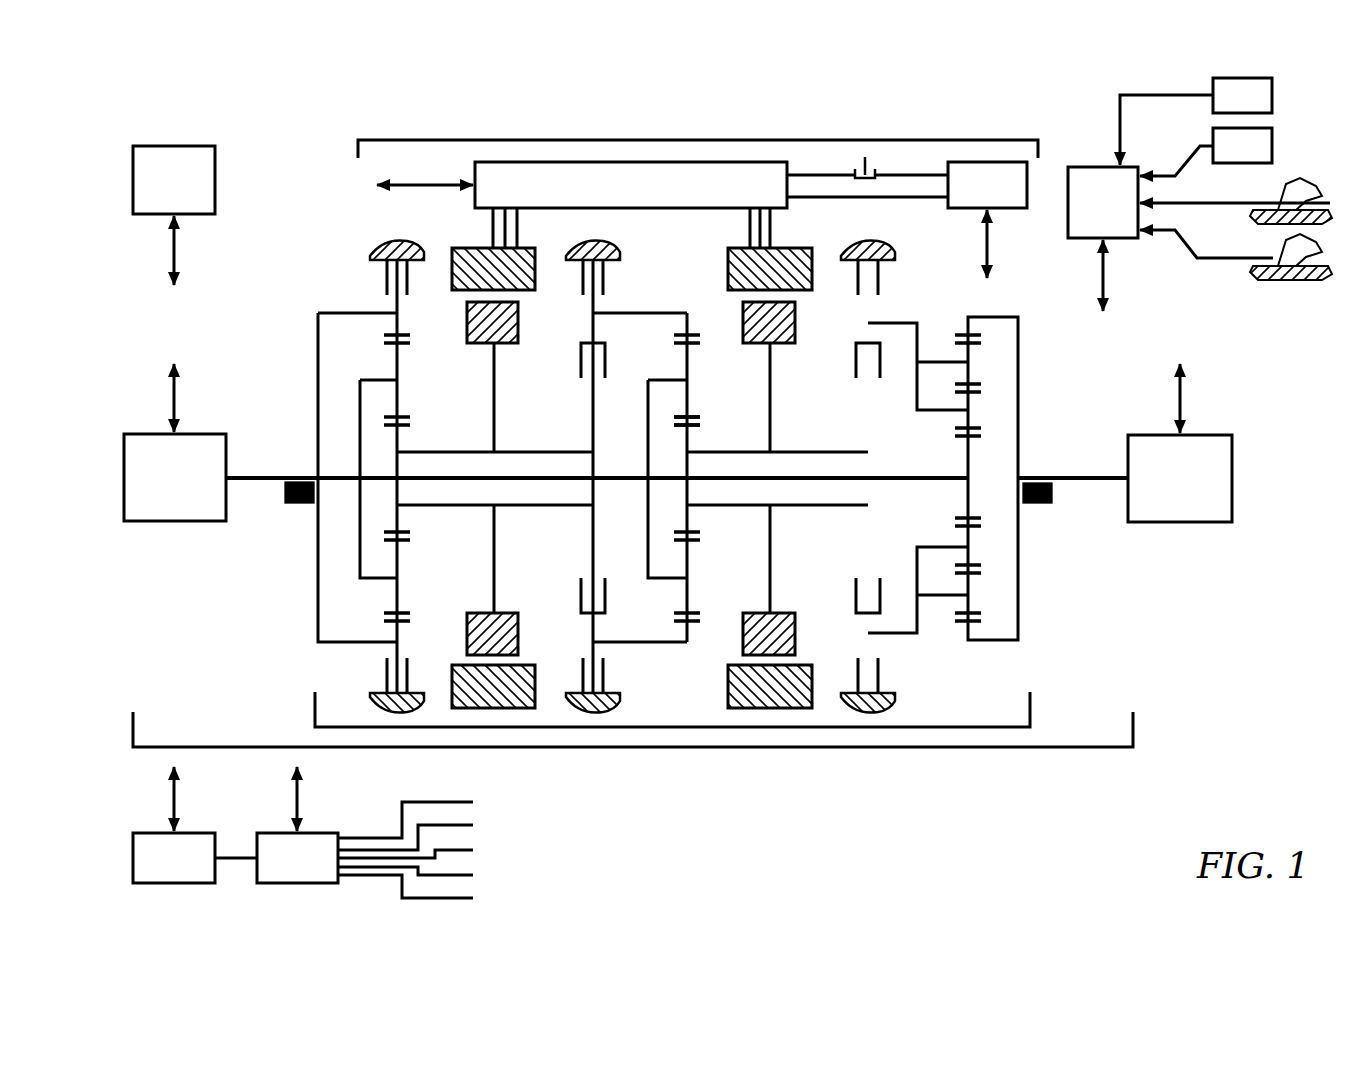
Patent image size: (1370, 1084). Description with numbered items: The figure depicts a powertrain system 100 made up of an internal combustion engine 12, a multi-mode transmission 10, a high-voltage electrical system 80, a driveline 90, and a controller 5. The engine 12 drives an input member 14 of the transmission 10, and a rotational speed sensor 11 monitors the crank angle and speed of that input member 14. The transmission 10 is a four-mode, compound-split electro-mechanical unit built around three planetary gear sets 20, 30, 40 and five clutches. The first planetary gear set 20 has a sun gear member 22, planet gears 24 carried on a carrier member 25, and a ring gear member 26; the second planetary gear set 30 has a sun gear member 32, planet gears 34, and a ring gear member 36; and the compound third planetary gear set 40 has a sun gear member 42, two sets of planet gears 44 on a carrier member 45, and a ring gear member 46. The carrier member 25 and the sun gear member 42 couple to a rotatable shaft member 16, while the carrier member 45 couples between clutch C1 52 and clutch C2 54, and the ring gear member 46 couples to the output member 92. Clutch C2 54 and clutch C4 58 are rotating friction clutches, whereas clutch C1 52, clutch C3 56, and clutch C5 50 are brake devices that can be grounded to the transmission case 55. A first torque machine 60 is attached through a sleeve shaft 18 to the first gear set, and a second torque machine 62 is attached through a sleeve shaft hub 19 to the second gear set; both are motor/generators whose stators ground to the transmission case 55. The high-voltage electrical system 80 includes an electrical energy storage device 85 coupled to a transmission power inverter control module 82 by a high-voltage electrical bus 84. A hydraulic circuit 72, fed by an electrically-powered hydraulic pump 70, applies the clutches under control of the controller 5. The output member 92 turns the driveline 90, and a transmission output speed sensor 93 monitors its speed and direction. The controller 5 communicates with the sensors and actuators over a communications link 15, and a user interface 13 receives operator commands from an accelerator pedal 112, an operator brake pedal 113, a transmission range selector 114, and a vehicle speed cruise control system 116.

The controller 5 is at (174, 180).
The multi-mode transmission 10 is at (803, 727).
The rotational speed sensor 11 is at (295, 503).
The internal combustion engine 12 is at (175, 477).
The user interface 13 is at (1103, 202).
The input member 14 is at (265, 482).
The communications link 15 is at (660, 494).
The rotatable shaft member 16 is at (600, 476).
The sleeve shaft 18 is at (540, 452).
The sleeve shaft hub 19 is at (818, 452).
The planetary gear set 20 is at (410, 524).
The sun gear member 22 is at (410, 431).
The planet gears 24 is at (398, 380).
The carrier member 25 is at (362, 450).
The ring gear member 26 is at (399, 325).
The planetary gear set 30 is at (692, 575).
The sun gear member 32 is at (698, 431).
The planet gears 34 is at (689, 380).
The ring gear member 36 is at (689, 325).
The planetary gear set 40 is at (955, 466).
The sun gear member 42 is at (972, 516).
The planet gears 44 is at (1000, 550).
The carrier member 45 is at (920, 326).
The ring gear member 46 is at (968, 625).
The clutch C5 50 is at (386, 283).
The clutch C1 52 is at (880, 286).
The clutch C2 54 is at (856, 372).
The transmission case 55 is at (392, 250).
The clutch C3 56 is at (607, 262).
The clutch C4 58 is at (580, 372).
The first torque machine 60 is at (516, 296).
The second torque machine 62 is at (791, 296).
The electrically-powered hydraulic pump 70 is at (195, 858).
The hydraulic circuit 72 is at (380, 850).
The high-voltage electrical system 80 is at (707, 140).
The transmission power inverter control module 82 is at (631, 205).
The high-voltage electrical bus 84 is at (902, 175).
The electrical energy storage device 85 is at (907, 185).
The driveline 90 is at (1180, 478).
The output member 92 is at (1078, 476).
The transmission output speed sensor 93 is at (1052, 493).
The powertrain system 100 is at (707, 747).
The accelerator pedal 112 is at (1275, 256).
The operator brake pedal 113 is at (1275, 200).
The transmission range selector 114 is at (1206, 152).
The vehicle speed cruise control system 116 is at (1196, 121).